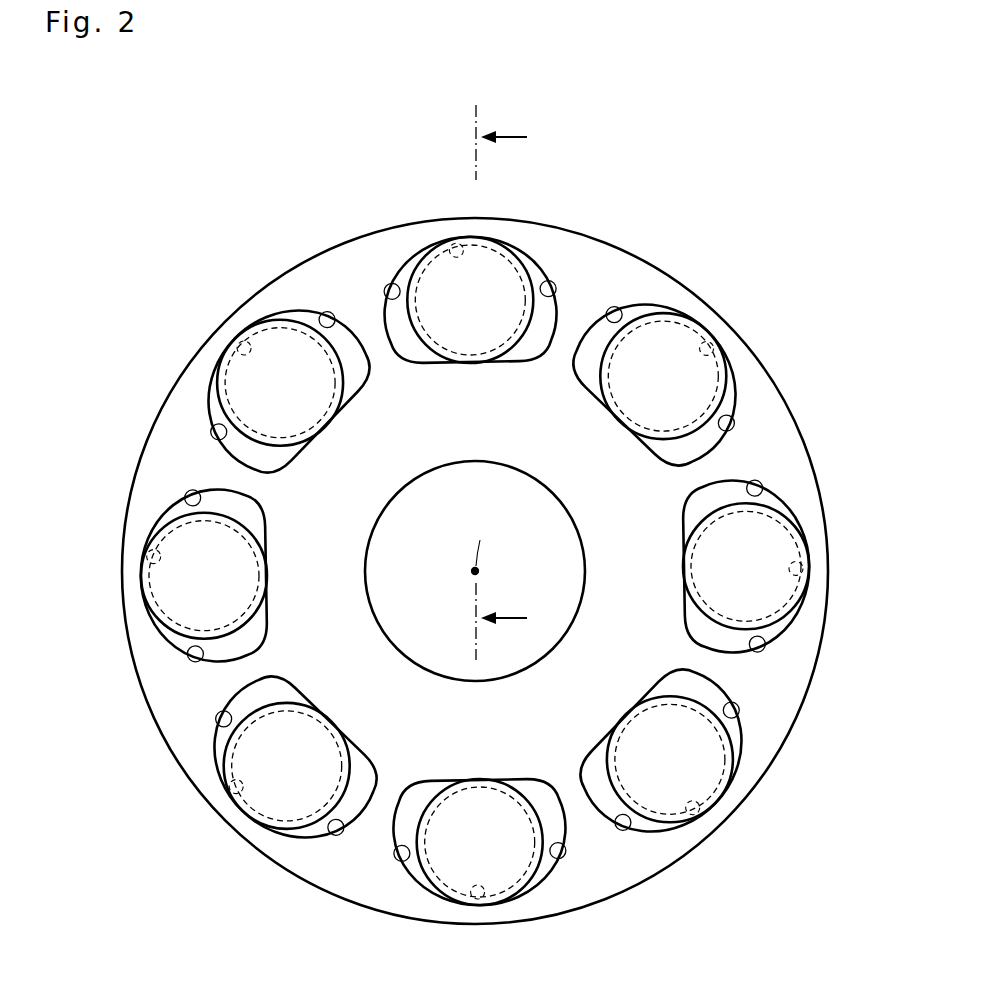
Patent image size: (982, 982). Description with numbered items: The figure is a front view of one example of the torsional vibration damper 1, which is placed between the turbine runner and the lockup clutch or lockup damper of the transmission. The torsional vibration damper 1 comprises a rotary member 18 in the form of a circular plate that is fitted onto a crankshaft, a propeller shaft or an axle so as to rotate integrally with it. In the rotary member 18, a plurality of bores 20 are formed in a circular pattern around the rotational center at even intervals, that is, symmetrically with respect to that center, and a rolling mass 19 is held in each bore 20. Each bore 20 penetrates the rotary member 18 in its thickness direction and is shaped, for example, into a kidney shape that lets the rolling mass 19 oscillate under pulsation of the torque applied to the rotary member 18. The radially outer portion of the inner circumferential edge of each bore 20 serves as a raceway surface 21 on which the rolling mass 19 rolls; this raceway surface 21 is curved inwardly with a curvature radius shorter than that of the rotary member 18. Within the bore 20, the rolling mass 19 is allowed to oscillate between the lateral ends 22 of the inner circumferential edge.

The torsional vibration damper 1 is at (771, 165).
The rotary member 18 is at (600, 237).
The rolling mass 19 is at (437, 262).
The bore 20 is at (300, 322).
The raceway surface 21 is at (457, 244).
The lateral ends 22 is at (328, 320).